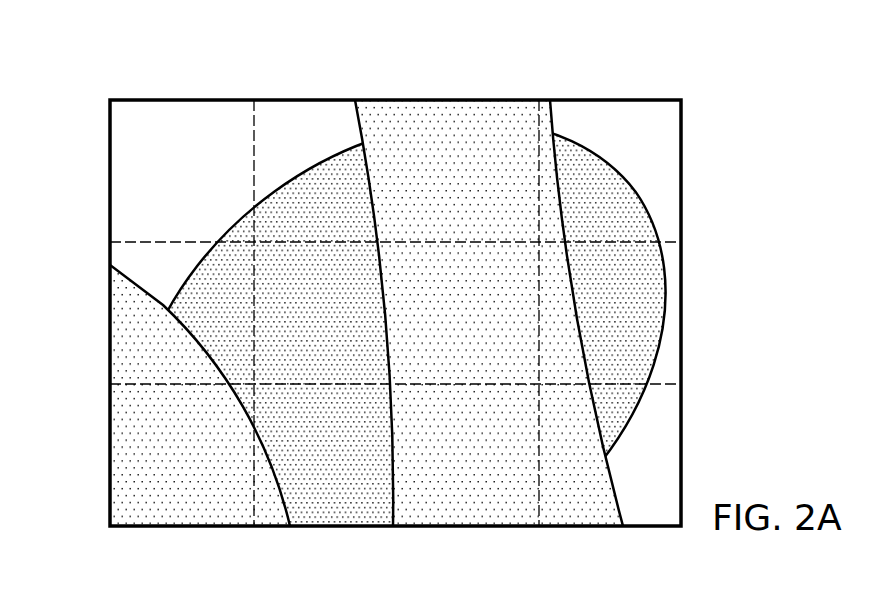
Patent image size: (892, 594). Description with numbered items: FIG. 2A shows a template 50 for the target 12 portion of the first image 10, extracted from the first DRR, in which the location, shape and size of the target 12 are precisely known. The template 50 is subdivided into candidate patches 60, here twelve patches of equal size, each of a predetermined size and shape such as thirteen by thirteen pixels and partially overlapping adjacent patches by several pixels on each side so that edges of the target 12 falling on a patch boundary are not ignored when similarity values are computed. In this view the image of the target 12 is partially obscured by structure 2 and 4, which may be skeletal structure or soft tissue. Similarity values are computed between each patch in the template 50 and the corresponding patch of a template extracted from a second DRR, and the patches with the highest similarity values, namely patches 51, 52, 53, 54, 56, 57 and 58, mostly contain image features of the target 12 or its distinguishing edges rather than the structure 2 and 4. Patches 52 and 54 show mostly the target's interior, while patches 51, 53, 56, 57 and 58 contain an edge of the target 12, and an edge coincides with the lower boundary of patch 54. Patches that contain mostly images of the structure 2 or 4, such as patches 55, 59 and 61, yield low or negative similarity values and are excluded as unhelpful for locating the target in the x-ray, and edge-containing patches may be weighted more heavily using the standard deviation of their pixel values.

The first image 10 is at (122, 67).
The target 12 is at (195, 158).
The candidate patches 60 is at (392, 72).
The template 50 is at (110, 185).
The structure 2 is at (85, 450).
The structure 4 is at (516, 548).
The patch 51 is at (285, 186).
The patch 52 is at (307, 316).
The patch 53 is at (176, 316).
The patch 54 is at (308, 462).
The patch 55 is at (454, 186).
The patch 56 is at (606, 186).
The patch 57 is at (607, 316).
The patch 58 is at (624, 466).
The patch 59 is at (456, 316).
The patch 61 is at (176, 462).